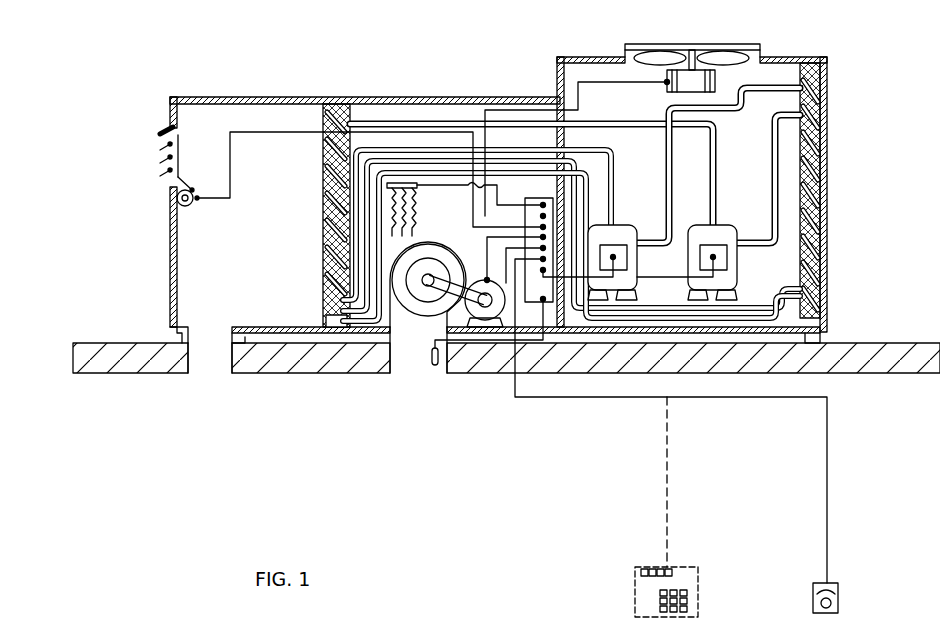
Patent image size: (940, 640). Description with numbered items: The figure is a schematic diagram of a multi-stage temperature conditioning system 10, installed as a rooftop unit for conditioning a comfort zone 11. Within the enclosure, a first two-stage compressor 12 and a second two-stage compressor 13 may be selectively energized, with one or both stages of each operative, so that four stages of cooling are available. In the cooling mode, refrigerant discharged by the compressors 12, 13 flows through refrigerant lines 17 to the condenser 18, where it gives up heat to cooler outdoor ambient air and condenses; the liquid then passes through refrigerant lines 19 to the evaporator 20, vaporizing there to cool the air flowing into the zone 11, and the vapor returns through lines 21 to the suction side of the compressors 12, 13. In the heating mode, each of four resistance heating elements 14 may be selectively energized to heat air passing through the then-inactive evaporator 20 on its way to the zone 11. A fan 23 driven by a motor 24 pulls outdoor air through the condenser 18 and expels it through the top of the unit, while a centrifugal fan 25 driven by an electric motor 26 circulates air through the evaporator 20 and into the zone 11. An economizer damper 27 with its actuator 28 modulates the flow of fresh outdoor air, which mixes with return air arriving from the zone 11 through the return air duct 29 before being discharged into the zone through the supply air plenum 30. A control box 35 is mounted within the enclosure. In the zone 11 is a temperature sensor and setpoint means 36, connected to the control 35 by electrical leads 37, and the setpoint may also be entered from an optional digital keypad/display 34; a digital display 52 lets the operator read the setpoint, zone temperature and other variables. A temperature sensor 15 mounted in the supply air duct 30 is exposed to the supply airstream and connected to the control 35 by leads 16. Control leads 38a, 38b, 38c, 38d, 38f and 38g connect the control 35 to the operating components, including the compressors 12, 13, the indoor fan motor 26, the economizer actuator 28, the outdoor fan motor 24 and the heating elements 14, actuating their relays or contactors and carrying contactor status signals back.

The temperature conditioning system 10 is at (255, 92).
The comfort zone 11 is at (399, 512).
The first two-stage compressor 12 is at (615, 228).
The second two-stage compressor 13 is at (715, 228).
The resistance heating elements 14 is at (414, 197).
The temperature sensor 15 is at (433, 364).
The leads 16 is at (467, 335).
The refrigerant lines 17 is at (757, 89).
The condenser 18 is at (824, 110).
The refrigerant lines 19 is at (574, 204).
The evaporator 20 is at (323, 283).
The refrigerant lines 21 is at (384, 122).
The fan 23 is at (662, 52).
The motor 24 is at (672, 89).
The centrifugal fan 25 is at (438, 262).
The electric motor 26 is at (493, 331).
The economizer damper 27 is at (160, 161).
The actuator 28 is at (190, 207).
The return air duct 29 is at (208, 366).
The supply air plenum 30 is at (413, 372).
The digital keypad/display 34 is at (700, 576).
The control box 35 is at (538, 197).
The zone sensor/setpoint means 36 is at (813, 600).
The electrical leads 37 is at (552, 399).
The control lead 38a is at (625, 270).
The control lead 38b is at (722, 279).
The control lead 38c is at (624, 84).
The control lead 38d is at (284, 135).
The control lead 38f is at (460, 193).
The blower motor wire 38g is at (486, 276).
The digital display 52 is at (636, 572).